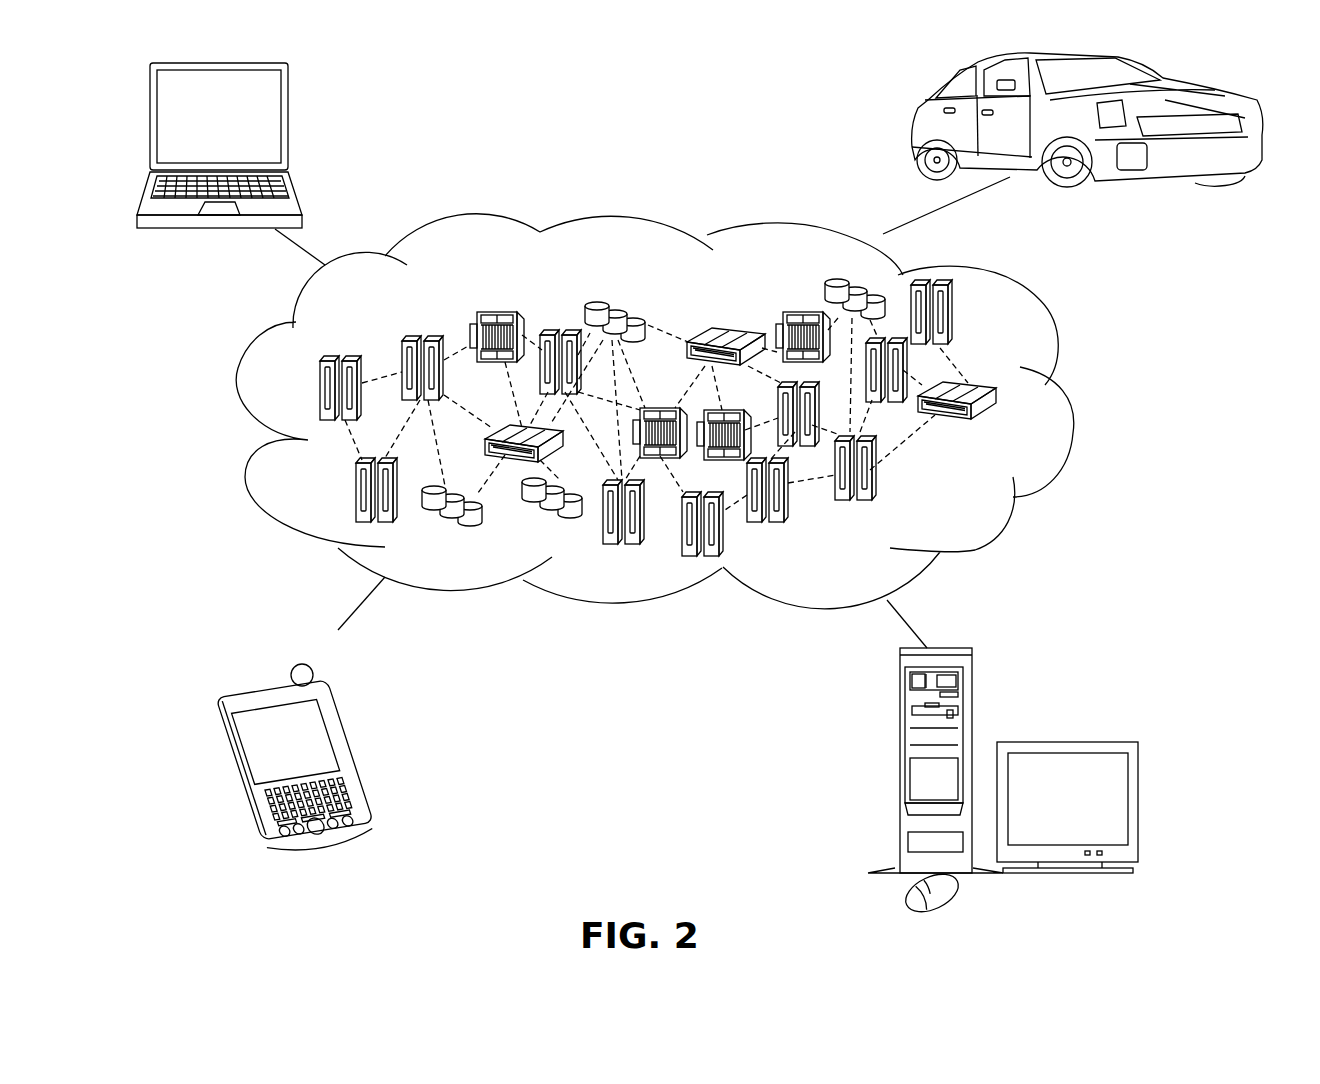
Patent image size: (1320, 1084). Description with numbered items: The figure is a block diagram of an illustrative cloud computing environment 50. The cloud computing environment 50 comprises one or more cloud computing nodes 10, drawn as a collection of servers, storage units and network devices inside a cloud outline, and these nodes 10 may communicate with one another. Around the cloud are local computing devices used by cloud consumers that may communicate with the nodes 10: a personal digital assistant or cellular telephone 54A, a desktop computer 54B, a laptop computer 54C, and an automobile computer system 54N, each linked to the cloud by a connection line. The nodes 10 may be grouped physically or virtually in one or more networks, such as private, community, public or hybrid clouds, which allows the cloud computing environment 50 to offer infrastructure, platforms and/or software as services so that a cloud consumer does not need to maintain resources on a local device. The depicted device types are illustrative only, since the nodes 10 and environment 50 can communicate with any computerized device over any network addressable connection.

The cloud computing node 10 is at (985, 505).
The cloud computing environment 50 is at (1060, 402).
The personal digital assistant or cellular telephone 54A is at (343, 713).
The desktop computer 54B is at (900, 708).
The laptop computer 54C is at (288, 100).
The automobile computer system 54N is at (912, 120).